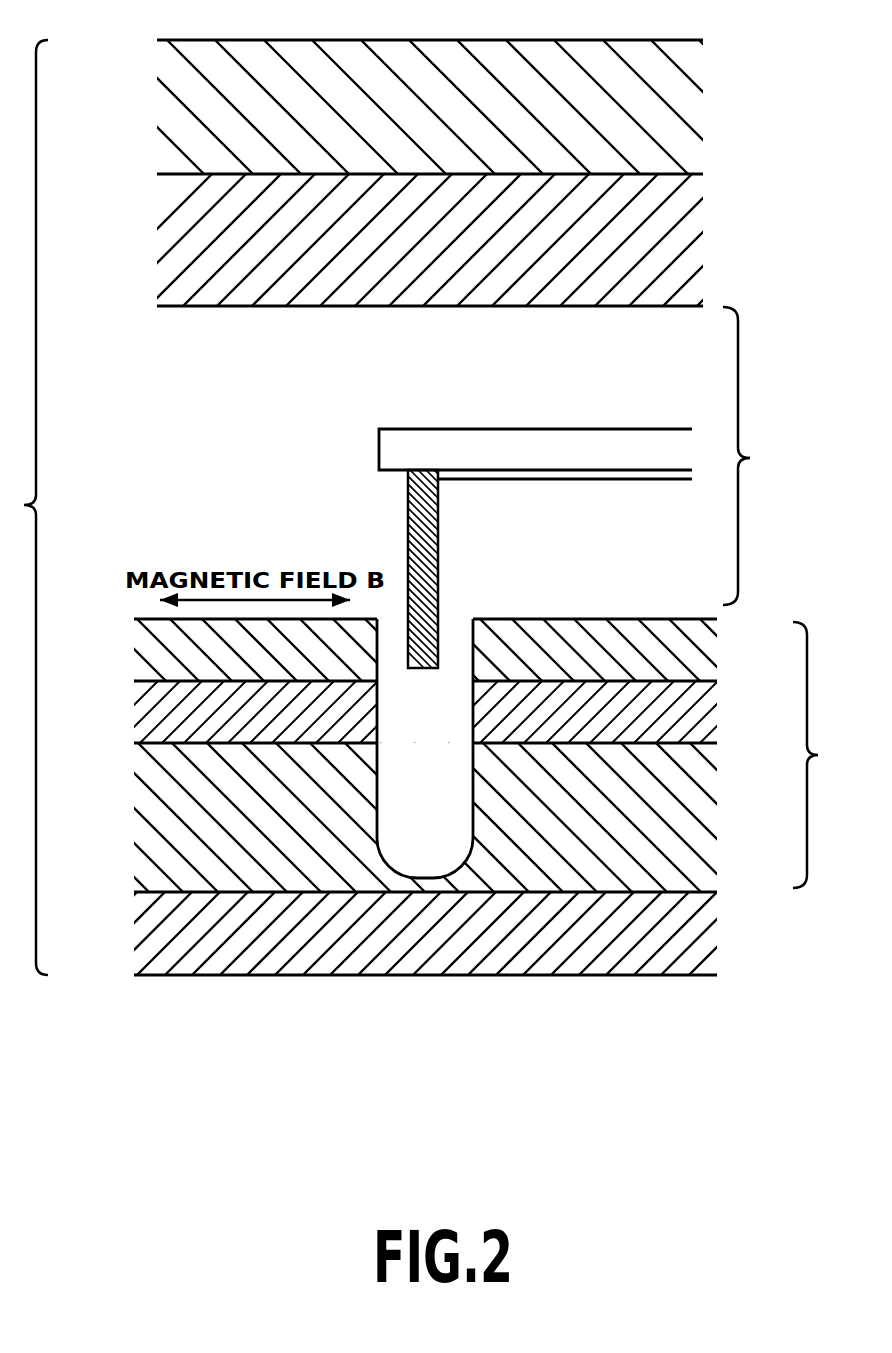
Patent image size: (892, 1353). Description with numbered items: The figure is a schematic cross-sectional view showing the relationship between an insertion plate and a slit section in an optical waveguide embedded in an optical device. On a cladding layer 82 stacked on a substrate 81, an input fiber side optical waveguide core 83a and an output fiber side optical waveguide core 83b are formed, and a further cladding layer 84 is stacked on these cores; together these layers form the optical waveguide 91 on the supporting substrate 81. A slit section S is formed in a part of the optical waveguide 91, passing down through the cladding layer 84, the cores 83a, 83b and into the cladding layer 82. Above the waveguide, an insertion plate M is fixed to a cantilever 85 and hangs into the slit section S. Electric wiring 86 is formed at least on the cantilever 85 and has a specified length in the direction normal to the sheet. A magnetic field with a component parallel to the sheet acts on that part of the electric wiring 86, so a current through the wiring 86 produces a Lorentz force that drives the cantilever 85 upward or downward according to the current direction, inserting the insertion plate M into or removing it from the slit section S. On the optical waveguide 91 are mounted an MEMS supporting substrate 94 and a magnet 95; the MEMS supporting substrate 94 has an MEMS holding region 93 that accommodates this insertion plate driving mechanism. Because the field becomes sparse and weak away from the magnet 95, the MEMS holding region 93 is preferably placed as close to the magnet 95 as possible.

The magnet 95 is at (677, 132).
The MEMS supporting substrate 94 is at (677, 268).
The MEMS holding region 93 is at (755, 456).
The optical waveguide 91 is at (825, 755).
The cantilever 85 is at (527, 435).
The electric wiring 86 is at (520, 478).
The insertion plate M is at (408, 528).
The cladding layer 84 is at (170, 657).
The input fiber side optical waveguide core 83a is at (170, 716).
The output fiber side optical waveguide core 83b is at (680, 714).
The cladding layer 82 is at (680, 825).
The substrate 81 is at (680, 937).
The slit section S is at (442, 830).